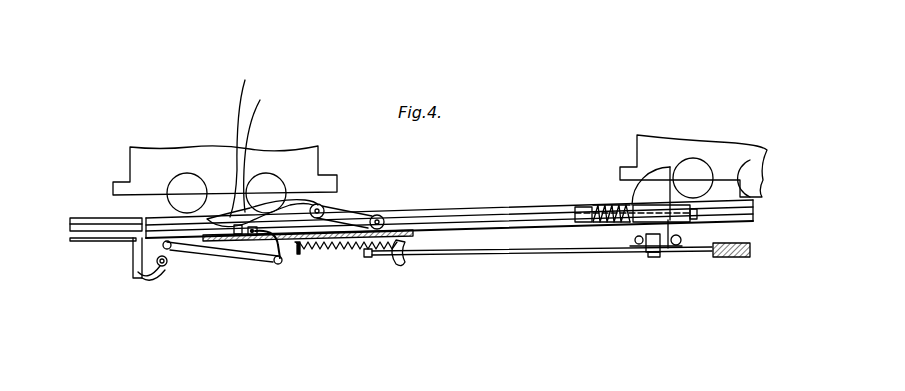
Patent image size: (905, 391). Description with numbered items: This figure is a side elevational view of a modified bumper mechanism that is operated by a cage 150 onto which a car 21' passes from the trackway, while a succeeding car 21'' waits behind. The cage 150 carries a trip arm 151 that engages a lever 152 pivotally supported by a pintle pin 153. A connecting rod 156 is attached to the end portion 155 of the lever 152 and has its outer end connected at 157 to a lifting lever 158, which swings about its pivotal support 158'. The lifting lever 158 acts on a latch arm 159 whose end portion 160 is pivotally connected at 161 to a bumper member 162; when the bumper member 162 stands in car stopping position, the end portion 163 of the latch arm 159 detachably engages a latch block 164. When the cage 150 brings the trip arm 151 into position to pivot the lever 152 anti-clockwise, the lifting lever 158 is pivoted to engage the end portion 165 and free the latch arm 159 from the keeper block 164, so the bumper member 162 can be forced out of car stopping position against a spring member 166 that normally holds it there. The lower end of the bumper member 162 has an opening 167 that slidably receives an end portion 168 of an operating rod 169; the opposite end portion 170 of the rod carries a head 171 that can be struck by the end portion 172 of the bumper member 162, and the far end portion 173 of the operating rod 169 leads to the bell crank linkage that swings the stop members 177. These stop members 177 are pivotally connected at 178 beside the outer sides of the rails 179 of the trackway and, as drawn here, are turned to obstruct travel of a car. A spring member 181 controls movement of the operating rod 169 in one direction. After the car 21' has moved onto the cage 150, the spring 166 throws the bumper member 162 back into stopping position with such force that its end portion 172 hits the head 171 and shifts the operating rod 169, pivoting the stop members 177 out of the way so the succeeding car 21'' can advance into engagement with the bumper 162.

The car 21' is at (225, 157).
The succeeding car 21'' is at (693, 166).
The cage 150 is at (88, 218).
The trip arm 151 is at (135, 256).
The lever 152 is at (141, 279).
The pintle pin 153 is at (166, 266).
The end portion of the lever 155 is at (176, 254).
The connecting rod 156 is at (254, 236).
The connection of connecting rod to lifting lever 157 is at (297, 255).
The lifting lever 158 is at (298, 262).
The pivotal support of the lifting lever 158' is at (288, 156).
The latch arm 159 is at (269, 147).
The end portion of the latch arm 160 is at (324, 204).
The pivotal connection of latch arm to bumper member 161 is at (336, 210).
The bumper member 162 is at (350, 205).
The end portion of the latch arm 163 is at (218, 234).
The latch block 164 is at (233, 242).
The end portion 165 is at (250, 140).
The spring member 166 is at (344, 250).
The opening 167 is at (412, 263).
The end portion of the operating rod 168 is at (423, 251).
The operating rod 169 is at (550, 253).
The end portion of the operating rod 170 is at (378, 258).
The head 171 is at (368, 258).
The end portion of the bumper member 172 is at (430, 212).
The end portion of the operating rod 173 is at (602, 256).
The stop members 177 is at (642, 198).
The pivotal connection of stop members 178 is at (588, 207).
The rails 179 is at (755, 216).
The spring member 181 is at (750, 255).